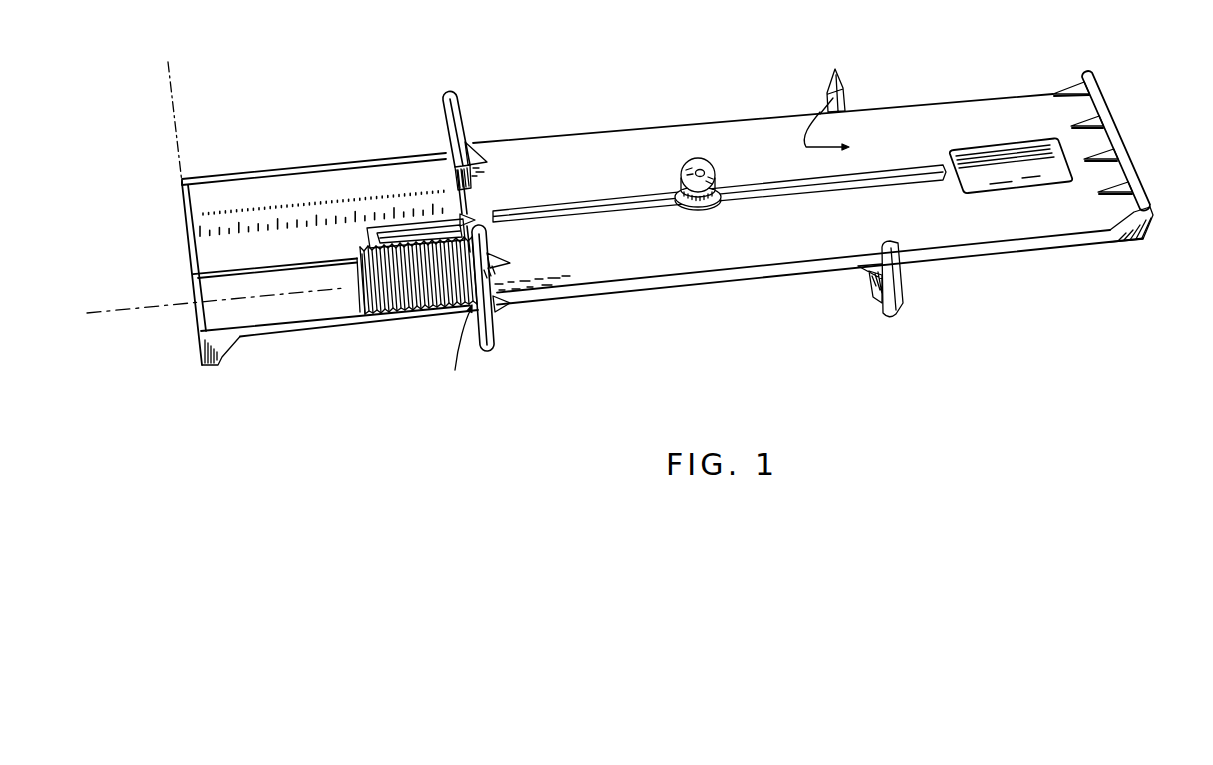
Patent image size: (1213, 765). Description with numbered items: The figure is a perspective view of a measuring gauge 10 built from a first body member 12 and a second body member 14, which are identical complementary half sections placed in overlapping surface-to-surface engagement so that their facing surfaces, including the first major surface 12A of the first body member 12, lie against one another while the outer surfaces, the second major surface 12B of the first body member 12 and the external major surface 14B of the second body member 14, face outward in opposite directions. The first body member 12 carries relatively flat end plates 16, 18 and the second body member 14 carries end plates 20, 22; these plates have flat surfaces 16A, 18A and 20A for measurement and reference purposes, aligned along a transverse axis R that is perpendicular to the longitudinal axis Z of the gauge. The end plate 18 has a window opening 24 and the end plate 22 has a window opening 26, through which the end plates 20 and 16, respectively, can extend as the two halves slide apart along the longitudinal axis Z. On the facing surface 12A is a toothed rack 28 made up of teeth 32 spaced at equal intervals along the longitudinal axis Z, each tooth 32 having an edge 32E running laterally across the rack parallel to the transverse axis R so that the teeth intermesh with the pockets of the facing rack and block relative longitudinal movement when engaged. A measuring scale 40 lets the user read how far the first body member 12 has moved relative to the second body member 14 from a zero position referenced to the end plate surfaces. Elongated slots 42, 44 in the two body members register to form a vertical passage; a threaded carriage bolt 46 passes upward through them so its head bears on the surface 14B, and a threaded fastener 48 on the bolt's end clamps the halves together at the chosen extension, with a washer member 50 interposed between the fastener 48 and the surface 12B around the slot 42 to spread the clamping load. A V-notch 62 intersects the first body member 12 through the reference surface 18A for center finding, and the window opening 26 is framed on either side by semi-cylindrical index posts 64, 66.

The measuring gauge 10 is at (604, 33).
The first body member 12 is at (839, 200).
The first major surface of first body member 12A is at (968, 259).
The second major surface of first body member 12B is at (930, 120).
The second body member 14 is at (421, 240).
The external major surface of second body member 14B is at (292, 331).
The end plate 16 is at (1156, 216).
The flat surface of end plate 16A is at (1128, 152).
The end plate 18 is at (445, 118).
The flat surface of end plate 18A is at (482, 345).
The end plate 20 is at (197, 364).
The flat surface of end plate 20A is at (187, 226).
The end plate 22 is at (861, 200).
The window opening 24 is at (456, 348).
The window opening 26 is at (820, 110).
The toothed rack 28 is at (403, 312).
The tooth 32 is at (279, 284).
The tooth edge 32E is at (357, 279).
The measuring scale 40 is at (247, 239).
The elongated slot 42 is at (585, 204).
The elongated slot 44 is at (374, 236).
The threaded carriage bolt 46 is at (702, 174).
The threaded fastener 48 is at (683, 167).
The washer member 50 is at (708, 207).
The V-notch 62 is at (469, 214).
The semi-cylindrical index post 64 is at (893, 240).
The semi-cylindrical index post 66 is at (851, 107).
The transverse axis R is at (168, 91).
The longitudinal axis Z is at (105, 312).